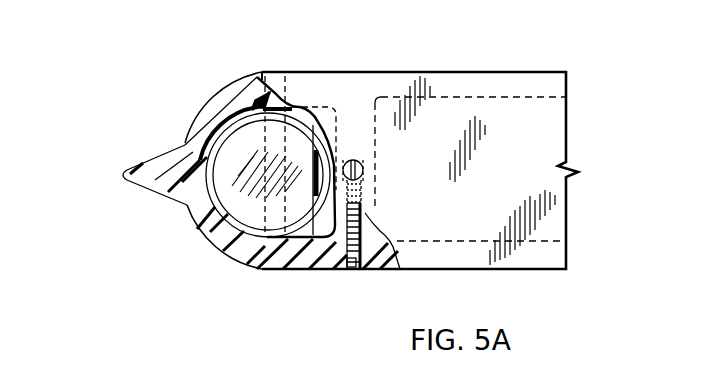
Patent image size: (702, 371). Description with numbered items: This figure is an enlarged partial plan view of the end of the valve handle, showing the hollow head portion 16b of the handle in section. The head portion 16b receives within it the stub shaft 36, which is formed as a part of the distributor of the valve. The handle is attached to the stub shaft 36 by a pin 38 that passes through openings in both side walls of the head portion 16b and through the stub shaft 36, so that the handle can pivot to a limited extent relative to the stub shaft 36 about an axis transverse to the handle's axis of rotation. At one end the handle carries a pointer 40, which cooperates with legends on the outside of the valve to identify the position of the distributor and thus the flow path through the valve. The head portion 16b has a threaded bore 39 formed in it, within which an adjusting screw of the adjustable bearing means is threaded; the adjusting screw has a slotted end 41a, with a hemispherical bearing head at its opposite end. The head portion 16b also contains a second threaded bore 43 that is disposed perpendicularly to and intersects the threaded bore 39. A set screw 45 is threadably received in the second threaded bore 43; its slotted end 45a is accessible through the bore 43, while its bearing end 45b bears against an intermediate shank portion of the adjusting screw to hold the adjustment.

The head portion 16b is at (518, 85).
The stub shaft 36 is at (232, 130).
The pin 38 is at (296, 108).
The threaded bore 39 is at (364, 169).
The pointer 40 is at (135, 184).
The slotted end 41a is at (351, 160).
The second threaded bore 43 is at (346, 254).
The set screw 45 is at (365, 224).
The slotted end 45a is at (349, 269).
The bearing end 45b is at (364, 186).